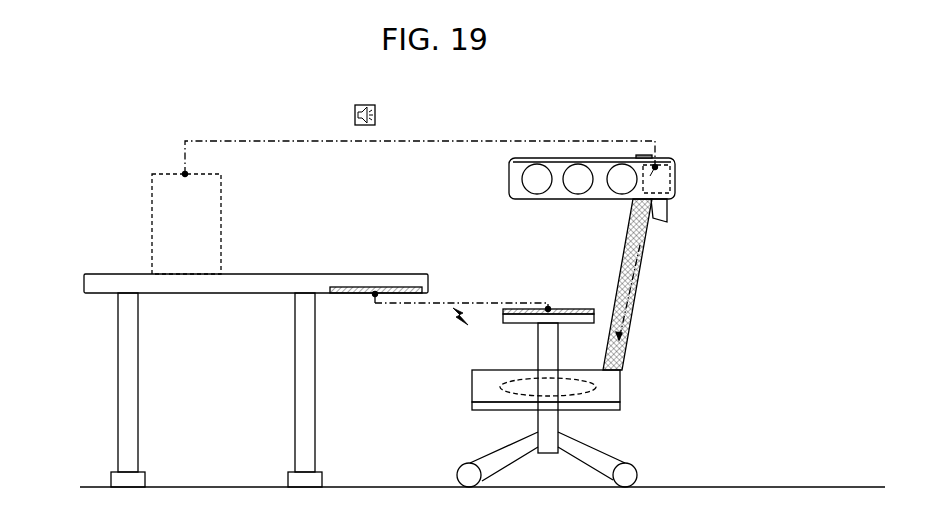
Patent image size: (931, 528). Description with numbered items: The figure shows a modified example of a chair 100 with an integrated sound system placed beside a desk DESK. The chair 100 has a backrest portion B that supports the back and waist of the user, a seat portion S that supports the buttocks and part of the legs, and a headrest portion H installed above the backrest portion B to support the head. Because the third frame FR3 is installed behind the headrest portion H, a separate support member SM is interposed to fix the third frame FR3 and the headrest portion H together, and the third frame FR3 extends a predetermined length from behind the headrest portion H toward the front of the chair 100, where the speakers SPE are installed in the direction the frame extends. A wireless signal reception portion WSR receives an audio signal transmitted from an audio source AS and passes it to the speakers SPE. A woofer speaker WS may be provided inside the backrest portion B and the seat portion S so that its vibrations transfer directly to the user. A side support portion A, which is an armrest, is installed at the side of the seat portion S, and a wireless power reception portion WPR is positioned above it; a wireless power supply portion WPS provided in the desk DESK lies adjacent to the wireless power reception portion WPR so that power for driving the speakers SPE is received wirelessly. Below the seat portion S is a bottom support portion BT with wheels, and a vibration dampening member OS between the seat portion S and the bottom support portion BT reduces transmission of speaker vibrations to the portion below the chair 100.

The chair 100 is at (687, 130).
The audio source AS is at (172, 185).
The desk DESK is at (106, 278).
The wireless power supply portion WPS is at (360, 290).
The speaker SPE is at (508, 188).
The third frame FR3 is at (600, 167).
The headrest portion H is at (642, 157).
The wireless signal reception portion WSR is at (673, 170).
The support member SM is at (662, 205).
The woofer speaker WS is at (642, 265).
The wireless power reception portion WPR is at (594, 318).
The side support portion A is at (545, 360).
The backrest portion B is at (627, 355).
The seat portion S is at (612, 380).
The vibration dampening member OS is at (627, 400).
The bottom support portion BT is at (543, 425).